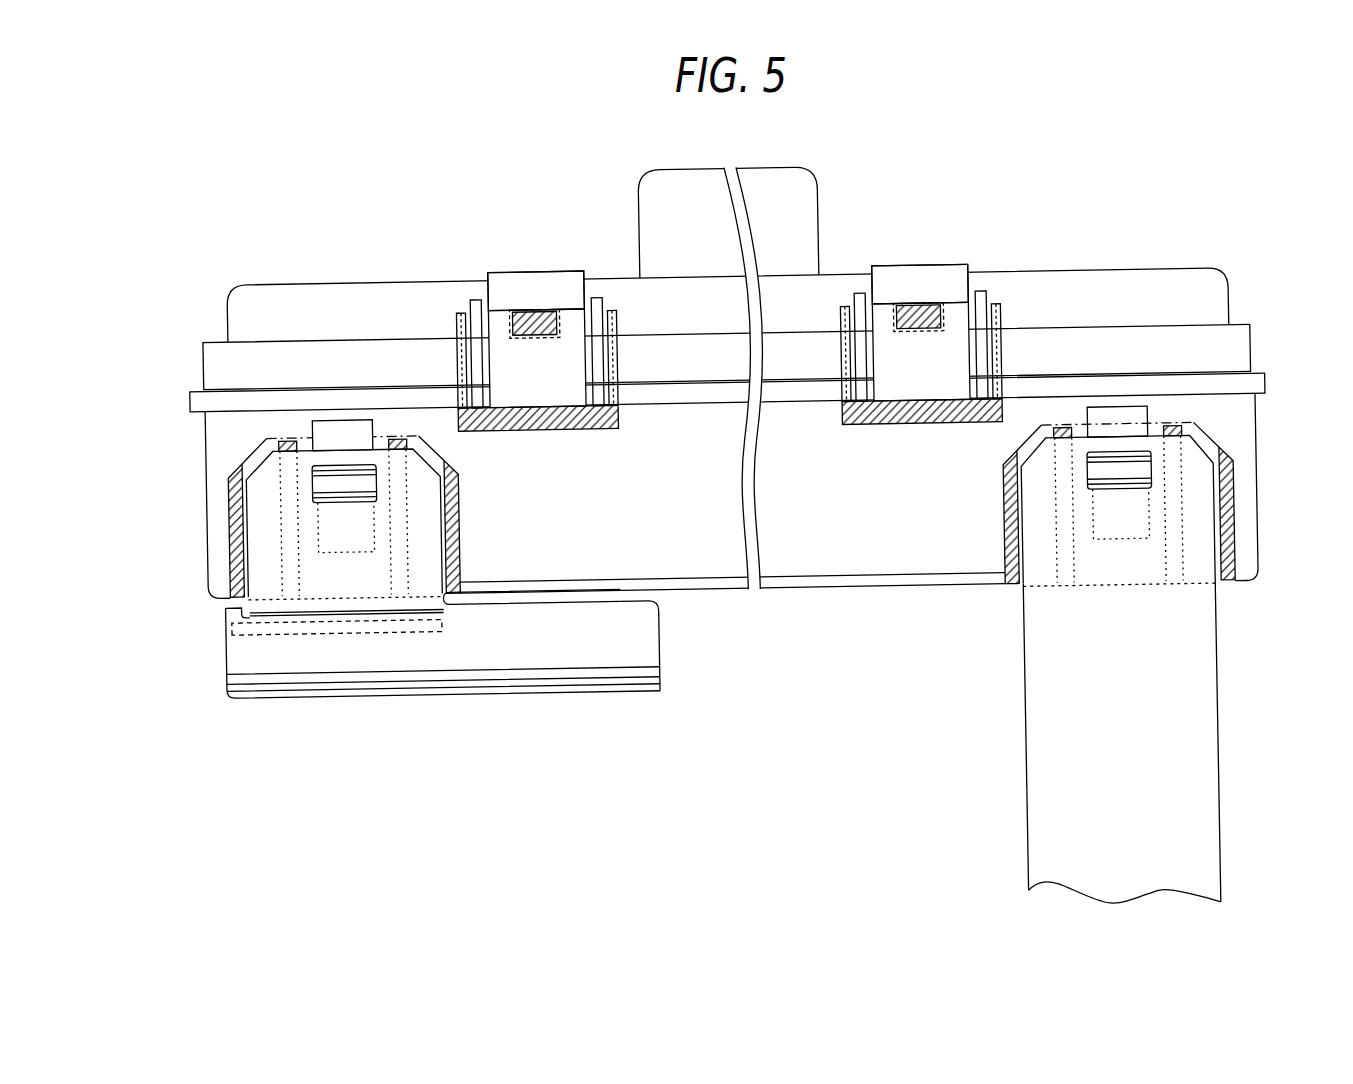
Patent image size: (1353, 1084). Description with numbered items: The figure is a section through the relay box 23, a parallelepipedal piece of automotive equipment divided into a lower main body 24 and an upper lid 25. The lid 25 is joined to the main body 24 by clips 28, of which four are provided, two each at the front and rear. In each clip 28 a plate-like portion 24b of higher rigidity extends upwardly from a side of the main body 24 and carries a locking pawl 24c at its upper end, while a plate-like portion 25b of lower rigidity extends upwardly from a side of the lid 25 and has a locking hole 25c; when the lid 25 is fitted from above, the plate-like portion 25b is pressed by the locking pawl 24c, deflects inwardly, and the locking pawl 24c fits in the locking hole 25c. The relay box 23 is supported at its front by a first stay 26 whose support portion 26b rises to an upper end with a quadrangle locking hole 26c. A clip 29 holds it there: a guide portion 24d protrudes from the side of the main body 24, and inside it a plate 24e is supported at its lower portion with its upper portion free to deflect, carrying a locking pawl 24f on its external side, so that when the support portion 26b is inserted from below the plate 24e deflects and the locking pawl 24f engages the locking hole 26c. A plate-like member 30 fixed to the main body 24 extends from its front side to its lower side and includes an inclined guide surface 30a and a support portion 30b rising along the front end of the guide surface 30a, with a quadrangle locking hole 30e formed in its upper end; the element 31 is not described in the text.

The relay box 23 is at (182, 449).
The main body 24 is at (613, 590).
The plate-like portion 24b is at (615, 357).
The locking pawl 24c is at (535, 338).
The guide portion 24d is at (230, 531).
The plate 24e is at (327, 424).
The locking pawl 24f is at (353, 480).
The lid 25 is at (310, 282).
The plate-like portion 25b is at (525, 283).
The locking hole 25c is at (738, 279).
The first stay 26 is at (1122, 742).
The support portion 26b is at (1042, 702).
The locking hole 26c is at (1114, 485).
The clip 28 is at (725, 327).
The clip 29 is at (1175, 504).
The plate-like member 30 is at (442, 679).
The guide surface 30a is at (490, 658).
The support portion 30b is at (430, 542).
The locking hole 30e is at (340, 492).
The holder receiving portion 31 is at (685, 469).